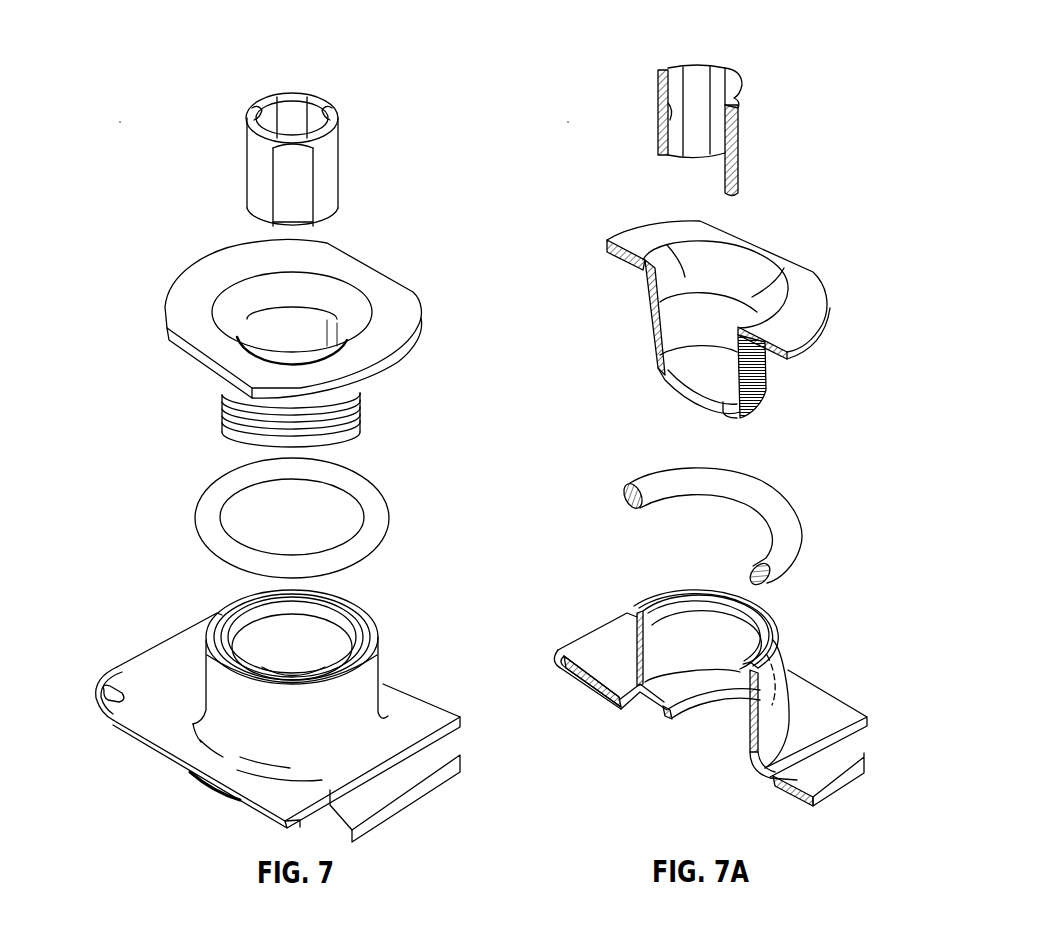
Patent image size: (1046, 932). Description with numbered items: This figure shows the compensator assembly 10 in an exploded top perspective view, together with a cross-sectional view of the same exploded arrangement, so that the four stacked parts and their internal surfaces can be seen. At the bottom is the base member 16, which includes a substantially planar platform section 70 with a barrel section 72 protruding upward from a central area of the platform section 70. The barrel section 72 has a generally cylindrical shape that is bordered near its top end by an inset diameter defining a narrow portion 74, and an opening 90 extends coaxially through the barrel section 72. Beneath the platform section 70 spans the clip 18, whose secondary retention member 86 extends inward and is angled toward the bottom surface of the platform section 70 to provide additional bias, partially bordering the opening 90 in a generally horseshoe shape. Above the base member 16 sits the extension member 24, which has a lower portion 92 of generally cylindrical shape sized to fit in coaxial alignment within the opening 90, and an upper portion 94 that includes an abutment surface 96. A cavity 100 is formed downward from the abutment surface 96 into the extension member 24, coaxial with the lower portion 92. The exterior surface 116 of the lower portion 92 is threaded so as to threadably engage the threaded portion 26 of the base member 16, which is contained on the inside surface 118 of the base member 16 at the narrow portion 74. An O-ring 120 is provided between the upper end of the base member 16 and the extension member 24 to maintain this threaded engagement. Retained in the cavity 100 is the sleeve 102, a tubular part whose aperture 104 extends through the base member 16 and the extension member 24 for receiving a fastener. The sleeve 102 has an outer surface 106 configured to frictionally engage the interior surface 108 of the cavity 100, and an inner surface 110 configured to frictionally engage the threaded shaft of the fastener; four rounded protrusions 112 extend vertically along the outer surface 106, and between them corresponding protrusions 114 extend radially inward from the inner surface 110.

In FIG. 7, the compensator assembly 10 is at (120, 122).
In FIG. 7A, the compensator assembly 10 is at (568, 122).
In FIG. 7, the base member 16 is at (150, 633).
In FIG. 7A, the base member 16 is at (585, 620).
In FIG. 7, the clip 18 is at (435, 797).
In FIG. 7A, the clip 18 is at (818, 779).
In FIG. 7, the extension member 24 is at (167, 360).
In FIG. 7A, the extension member 24 is at (807, 255).
In FIG. 7, the threaded portion 26 is at (262, 612).
In FIG. 7A, the threaded portion 26 is at (688, 612).
In FIG. 7, the platform section 70 is at (160, 727).
In FIG. 7A, the platform section 70 is at (837, 718).
In FIG. 7, the barrel section 72 is at (367, 697).
In FIG. 7A, the barrel section 72 is at (773, 707).
In FIG. 7, the narrow portion 74 is at (375, 657).
In FIG. 7A, the narrow portion 74 is at (770, 628).
In FIG. 7A, the secondary retention member 86 is at (663, 710).
In FIG. 7, the opening 90 is at (320, 648).
In FIG. 7A, the opening 90 is at (703, 646).
In FIG. 7, the lower portion 92 is at (220, 388).
In FIG. 7A, the lower portion 92 is at (648, 317).
In FIG. 7, the upper portion 94 is at (185, 310).
In FIG. 7A, the upper portion 94 is at (610, 243).
In FIG. 7, the abutment surface 96 is at (193, 290).
In FIG. 7A, the abutment surface 96 is at (807, 298).
In FIG. 7, the cavity 100 is at (303, 318).
In FIG. 7, the sleeve 102 is at (243, 158).
In FIG. 7A, the sleeve 102 is at (748, 125).
In FIG. 7, the aperture 104 is at (318, 100).
In FIG. 7, the outer surface 106 is at (257, 190).
In FIG. 7, the interior surface 108 is at (350, 302).
In FIG. 7A, the interior surface 108 is at (703, 322).
In FIG. 7, the inner surface 110 is at (277, 95).
In FIG. 7A, the inner surface 110 is at (720, 117).
In FIG. 7, the rounded protrusions 112 is at (330, 157).
In FIG. 7, the protrusions 114 is at (257, 106).
In FIG. 7A, the protrusions 114 is at (737, 80).
In FIG. 7A, the exterior surface 116 is at (770, 375).
In FIG. 7A, the inside surface 118 is at (712, 612).
In FIG. 7, the O-ring 120 is at (374, 463).
In FIG. 7A, the O-ring 120 is at (790, 486).